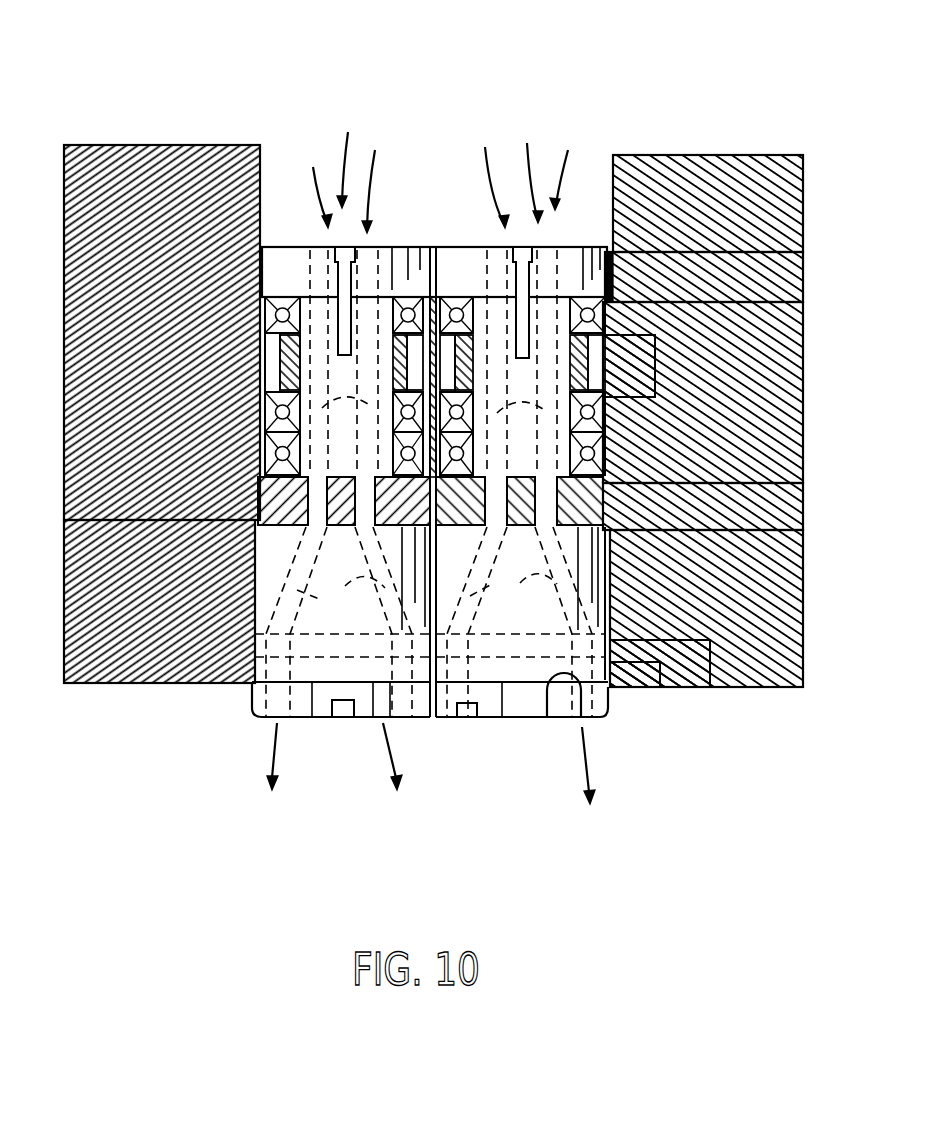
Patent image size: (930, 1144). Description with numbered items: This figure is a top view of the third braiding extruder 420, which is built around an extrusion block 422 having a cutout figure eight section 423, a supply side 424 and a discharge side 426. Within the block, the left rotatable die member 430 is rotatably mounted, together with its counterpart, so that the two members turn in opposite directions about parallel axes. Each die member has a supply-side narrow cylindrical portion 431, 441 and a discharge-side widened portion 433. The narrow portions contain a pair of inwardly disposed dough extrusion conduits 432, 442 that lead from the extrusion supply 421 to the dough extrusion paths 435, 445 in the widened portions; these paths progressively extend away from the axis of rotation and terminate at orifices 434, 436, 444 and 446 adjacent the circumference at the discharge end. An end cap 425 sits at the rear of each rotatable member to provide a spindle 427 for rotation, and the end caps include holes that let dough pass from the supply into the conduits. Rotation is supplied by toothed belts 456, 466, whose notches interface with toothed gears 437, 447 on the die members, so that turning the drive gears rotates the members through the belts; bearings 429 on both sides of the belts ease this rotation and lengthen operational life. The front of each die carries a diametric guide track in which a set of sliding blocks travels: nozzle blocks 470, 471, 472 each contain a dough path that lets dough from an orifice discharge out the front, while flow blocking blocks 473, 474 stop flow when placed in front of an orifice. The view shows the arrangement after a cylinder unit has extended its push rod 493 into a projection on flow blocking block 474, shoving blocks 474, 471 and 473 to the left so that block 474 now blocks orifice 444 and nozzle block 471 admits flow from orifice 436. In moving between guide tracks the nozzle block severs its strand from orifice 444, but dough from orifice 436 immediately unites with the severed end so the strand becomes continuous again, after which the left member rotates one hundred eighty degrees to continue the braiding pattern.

The braiding extruder 420 is at (128, 86).
The extrusion supply 421 is at (393, 178).
The extrusion block 422 is at (78, 360).
The cutout figure eight section 423 is at (610, 687).
The supply side 424 is at (402, 247).
The end cap 425 is at (443, 228).
The discharge side 426 is at (598, 730).
The spindle 427 is at (525, 257).
The bearing 429 is at (280, 297).
The left rotatable die member 430 is at (250, 683).
The supply-side narrow cylindrical portion 431 is at (322, 243).
The dough extrusion conduit 432 is at (344, 362).
The discharge-side widened portion 433 is at (350, 625).
The orifice 434 is at (282, 684).
The dough extrusion path 435 is at (339, 622).
The orifice 436 is at (403, 720).
The toothed gear 437 is at (154, 387).
The supply-side narrow cylindrical portion 441 is at (597, 247).
The dough extrusion conduit 442 is at (522, 362).
The orifice 444 is at (483, 720).
The dough extrusion path 445 is at (519, 622).
The orifice 446 is at (546, 690).
The toothed gear 447 is at (728, 366).
The toothed belt 456 is at (280, 353).
The toothed belt 466 is at (615, 380).
The nozzle block 470 is at (258, 717).
The nozzle block 471 is at (383, 717).
The nozzle block 472 is at (610, 687).
The flow blocking block 473 is at (358, 717).
The flow blocking block 474 is at (472, 723).
The push rod 493 is at (518, 687).